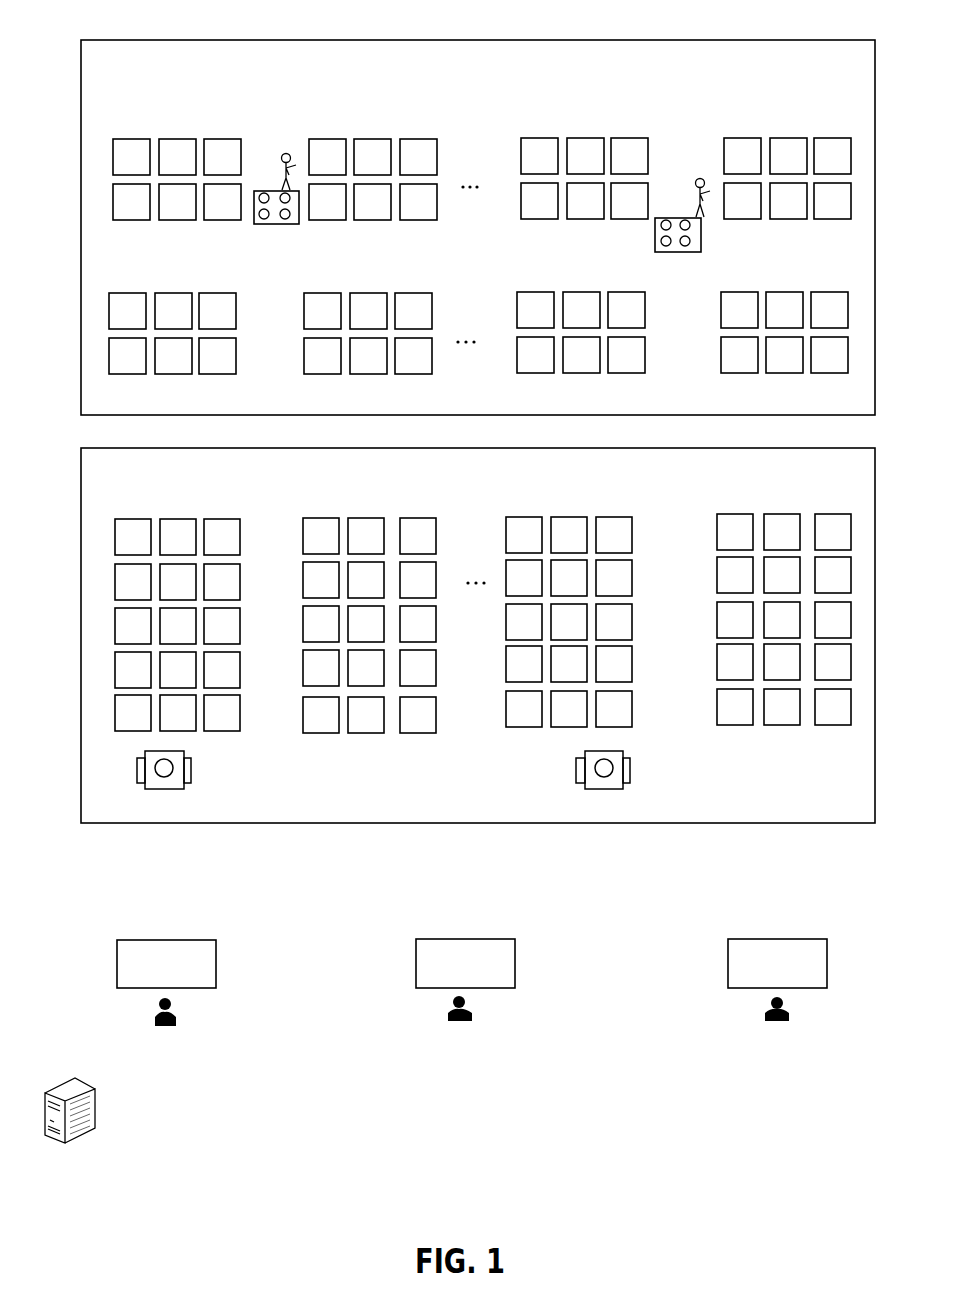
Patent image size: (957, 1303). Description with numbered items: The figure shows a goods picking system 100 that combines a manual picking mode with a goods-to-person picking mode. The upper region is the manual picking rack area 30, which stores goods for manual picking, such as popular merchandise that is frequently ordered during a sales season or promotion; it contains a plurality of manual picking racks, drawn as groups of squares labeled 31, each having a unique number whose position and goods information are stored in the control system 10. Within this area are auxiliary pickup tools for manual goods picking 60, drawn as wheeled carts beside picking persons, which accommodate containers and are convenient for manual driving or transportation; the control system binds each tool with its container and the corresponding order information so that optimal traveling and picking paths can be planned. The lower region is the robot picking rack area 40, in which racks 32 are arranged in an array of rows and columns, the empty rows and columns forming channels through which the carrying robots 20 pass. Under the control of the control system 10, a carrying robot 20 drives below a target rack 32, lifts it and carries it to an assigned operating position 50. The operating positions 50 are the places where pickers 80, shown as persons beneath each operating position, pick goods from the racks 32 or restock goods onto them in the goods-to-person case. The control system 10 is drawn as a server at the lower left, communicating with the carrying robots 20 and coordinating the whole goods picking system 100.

The goods picking system 100 is at (845, 16).
The manual picking rack area 30 is at (478, 227).
The parking region group 31 is at (128, 139).
The rack 32 is at (736, 292).
The robot picking rack area 40 is at (478, 635).
The auxiliary pickup tool for manual goods picking 60 is at (267, 191).
The carrying robot 20 is at (195, 759).
The operating position 50 is at (187, 940).
The picker 80 is at (174, 1027).
The control system 10 is at (97, 1098).